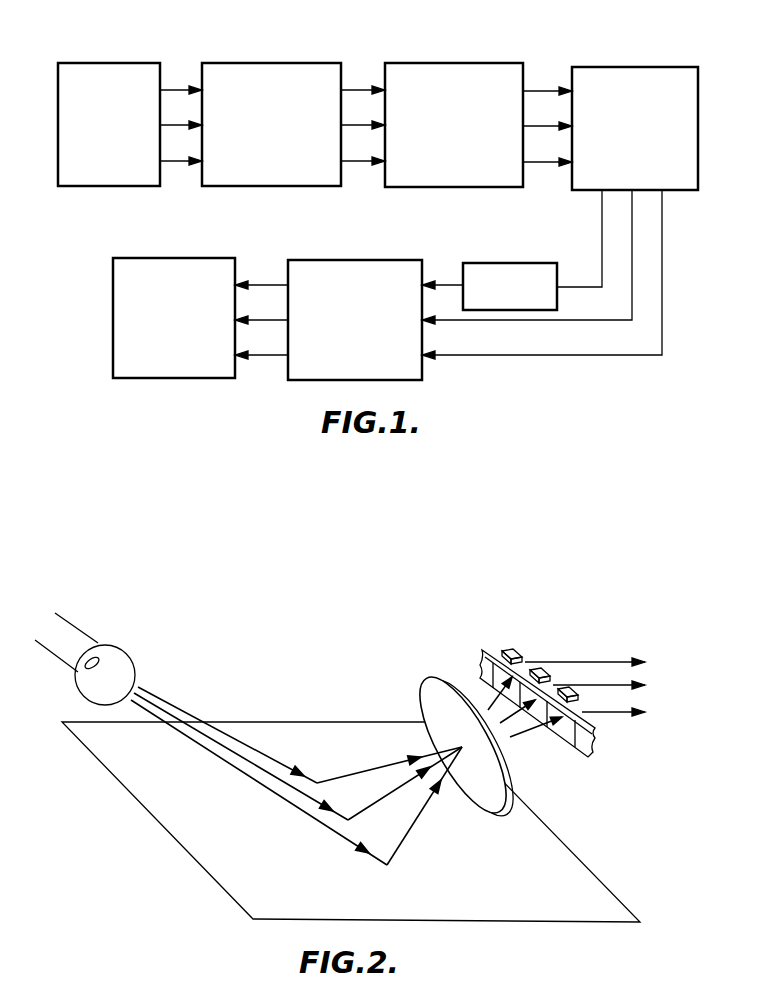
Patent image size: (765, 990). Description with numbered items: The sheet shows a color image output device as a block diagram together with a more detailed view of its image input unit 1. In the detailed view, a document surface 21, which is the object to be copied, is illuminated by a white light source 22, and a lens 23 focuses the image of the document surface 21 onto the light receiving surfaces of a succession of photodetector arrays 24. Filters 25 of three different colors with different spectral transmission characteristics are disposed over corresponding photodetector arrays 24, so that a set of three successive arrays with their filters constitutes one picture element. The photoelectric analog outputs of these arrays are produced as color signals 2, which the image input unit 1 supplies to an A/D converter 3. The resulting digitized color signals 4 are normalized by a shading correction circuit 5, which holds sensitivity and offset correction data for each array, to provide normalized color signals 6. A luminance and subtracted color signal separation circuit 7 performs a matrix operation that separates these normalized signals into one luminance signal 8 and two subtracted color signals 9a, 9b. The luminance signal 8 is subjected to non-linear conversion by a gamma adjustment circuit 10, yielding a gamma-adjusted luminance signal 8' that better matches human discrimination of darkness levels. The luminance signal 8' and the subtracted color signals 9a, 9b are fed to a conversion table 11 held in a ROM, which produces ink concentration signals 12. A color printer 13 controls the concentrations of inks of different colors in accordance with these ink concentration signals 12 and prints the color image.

In FIG. 1, the image input unit 1 is at (137, 63).
In FIG. 1, the color signals 2 is at (172, 86).
In FIG. 2, the color signals 2 is at (658, 688).
In FIG. 1, the A/D converter 3 is at (312, 63).
In FIG. 1, the digitized color signals 4 is at (355, 87).
In FIG. 1, the shading correction circuit 5 is at (488, 63).
In FIG. 1, the normalized color signals 6 is at (537, 89).
In FIG. 1, the luminance and subtracted color signal separation circuit 7 is at (668, 67).
In FIG. 1, the luminance signal 8 is at (574, 238).
In FIG. 1, the luminance signal 8' is at (443, 256).
In FIG. 1, the subtracted color signal 9a is at (633, 242).
In FIG. 1, the subtracted color signal 9b is at (663, 296).
In FIG. 1, the gamma adjustment circuit 10 is at (520, 263).
In FIG. 1, the conversion table 11 is at (380, 260).
In FIG. 1, the ink concentration signals 12 is at (272, 282).
In FIG. 1, the color printer 13 is at (200, 258).
In FIG. 2, the document surface 21 is at (332, 724).
In FIG. 2, the white light source 22 is at (137, 667).
In FIG. 2, the lens 23 is at (452, 685).
In FIG. 2, the photodetector arrays 24 is at (513, 650).
In FIG. 2, the filters 25 is at (583, 740).